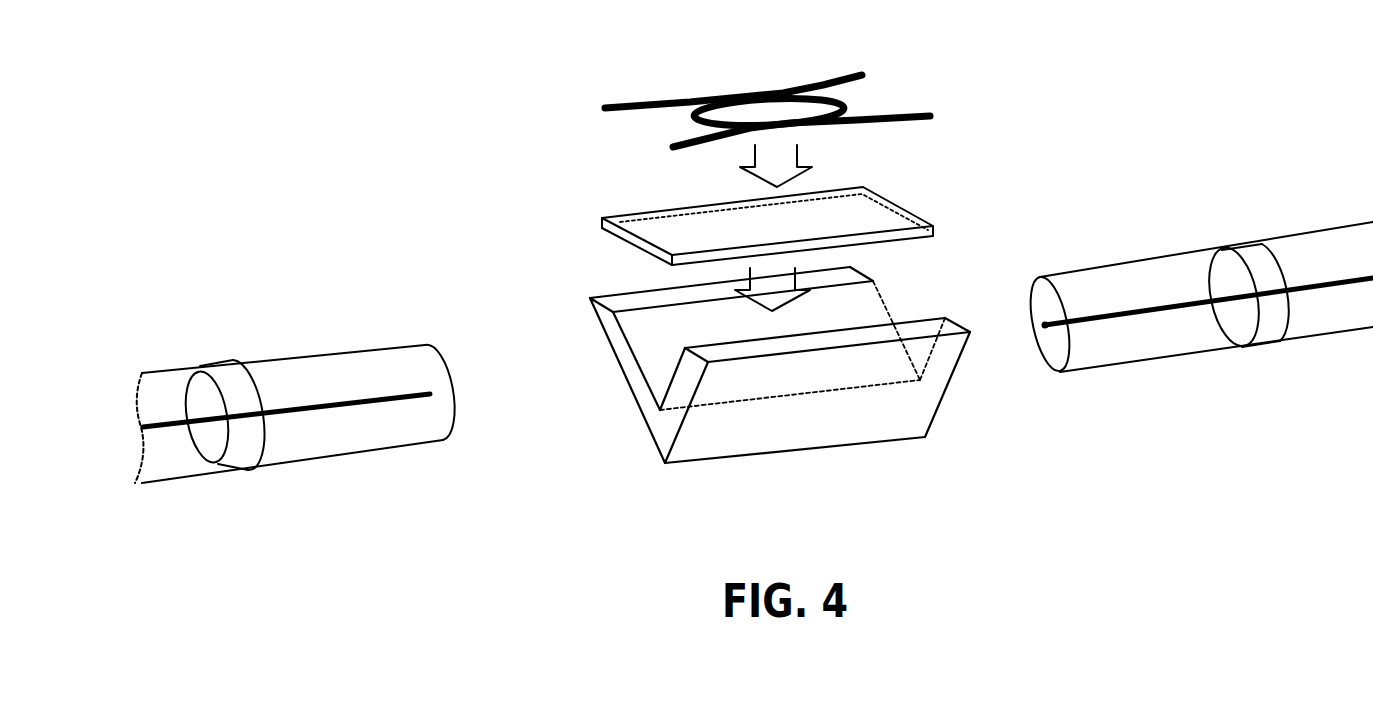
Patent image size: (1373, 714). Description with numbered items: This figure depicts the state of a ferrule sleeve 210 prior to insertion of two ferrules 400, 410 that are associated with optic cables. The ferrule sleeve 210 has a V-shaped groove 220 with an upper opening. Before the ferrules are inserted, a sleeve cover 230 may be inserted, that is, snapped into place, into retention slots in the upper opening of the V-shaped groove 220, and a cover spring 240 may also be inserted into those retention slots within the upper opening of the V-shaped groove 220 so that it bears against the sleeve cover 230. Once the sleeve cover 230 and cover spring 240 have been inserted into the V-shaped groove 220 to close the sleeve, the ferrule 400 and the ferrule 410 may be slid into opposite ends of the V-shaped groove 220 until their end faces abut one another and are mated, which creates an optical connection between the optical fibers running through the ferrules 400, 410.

The ferrule sleeve 210 is at (644, 436).
The V-shaped groove 220 is at (644, 348).
The sleeve cover 230 is at (921, 202).
The cover spring 240 is at (899, 80).
The ferrule 400 is at (258, 373).
The ferrule 410 is at (1198, 264).